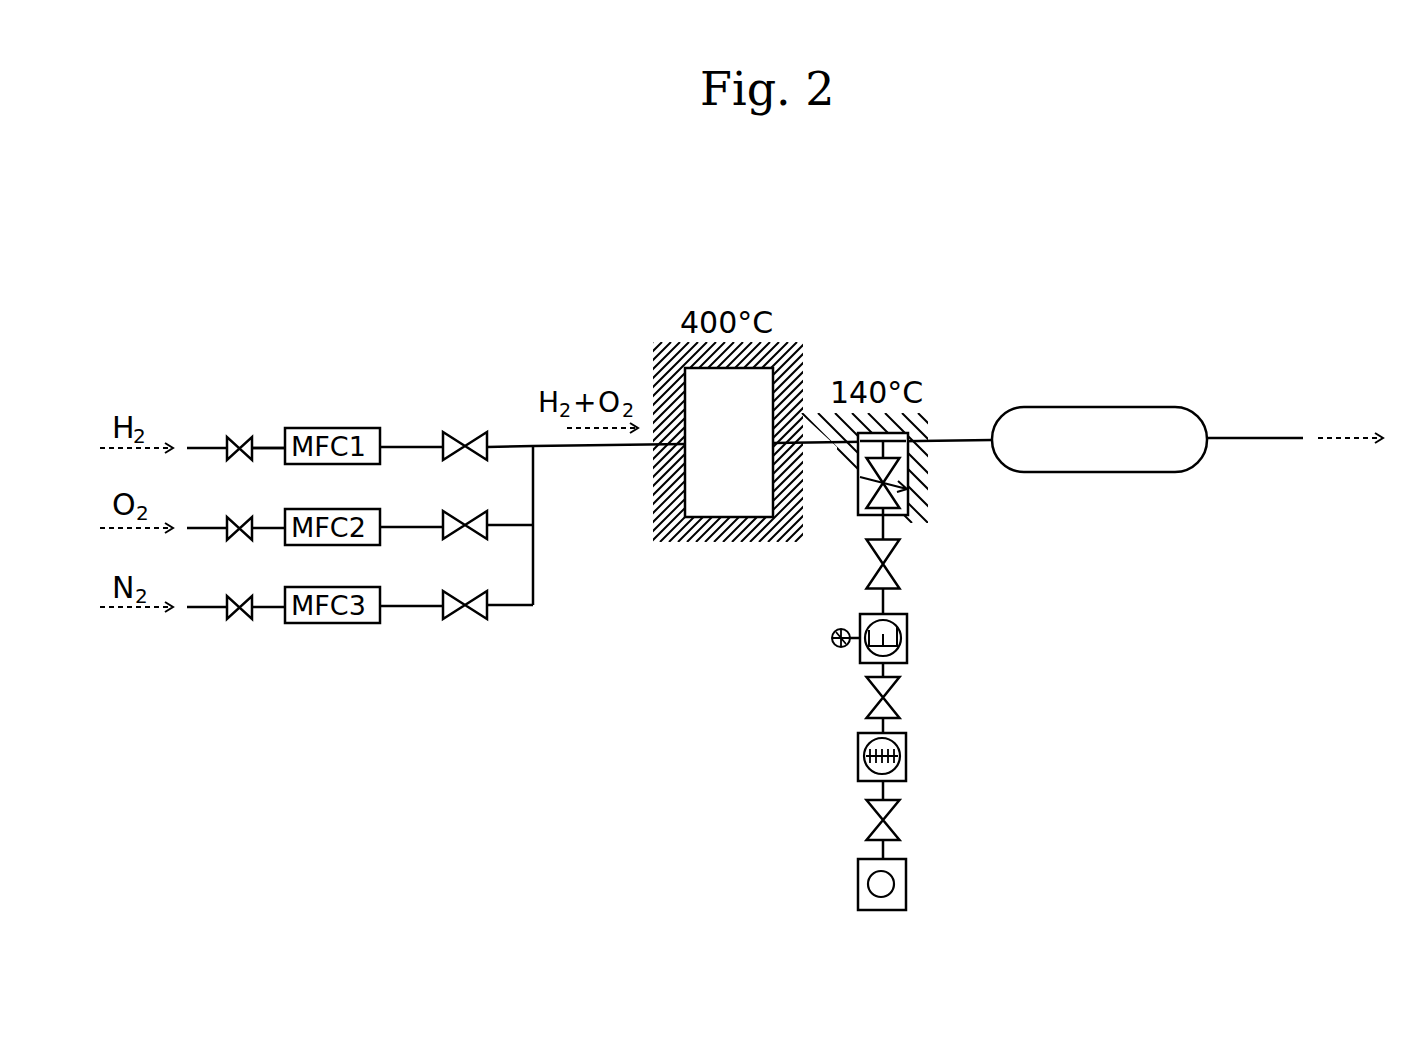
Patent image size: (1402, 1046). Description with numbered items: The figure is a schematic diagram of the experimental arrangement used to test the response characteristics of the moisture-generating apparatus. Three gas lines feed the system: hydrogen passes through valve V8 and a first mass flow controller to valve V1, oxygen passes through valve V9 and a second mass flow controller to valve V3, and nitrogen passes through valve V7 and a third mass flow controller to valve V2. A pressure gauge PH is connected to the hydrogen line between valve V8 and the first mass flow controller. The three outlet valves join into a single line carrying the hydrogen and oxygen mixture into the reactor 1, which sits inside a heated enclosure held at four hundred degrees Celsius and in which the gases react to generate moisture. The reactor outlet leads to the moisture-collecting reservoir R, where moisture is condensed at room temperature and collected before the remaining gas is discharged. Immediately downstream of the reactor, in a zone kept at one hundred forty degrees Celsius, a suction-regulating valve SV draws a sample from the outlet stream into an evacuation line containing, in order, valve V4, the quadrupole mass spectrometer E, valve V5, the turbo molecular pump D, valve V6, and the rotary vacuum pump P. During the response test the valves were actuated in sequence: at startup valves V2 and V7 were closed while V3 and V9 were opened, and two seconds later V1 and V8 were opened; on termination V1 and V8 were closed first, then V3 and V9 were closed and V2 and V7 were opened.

The reactor 1 is at (750, 407).
The pressure gauge / hydrogen pressure sensor PH is at (273, 447).
The valve V1 is at (460, 432).
The valve V2 is at (460, 591).
The valve V3 is at (460, 511).
The valve V4 is at (887, 556).
The valve V5 is at (887, 690).
The valve V6 is at (887, 813).
The valve V7 is at (240, 596).
The valve V8 is at (240, 436).
The valve V9 is at (240, 517).
The suction-regulating valve SV is at (890, 500).
The quadrupole mass spectrometer E is at (908, 637).
The turbo molecular pump D is at (906, 751).
The vacuum pump P is at (906, 880).
The moisture-collecting reservoir R is at (1128, 407).